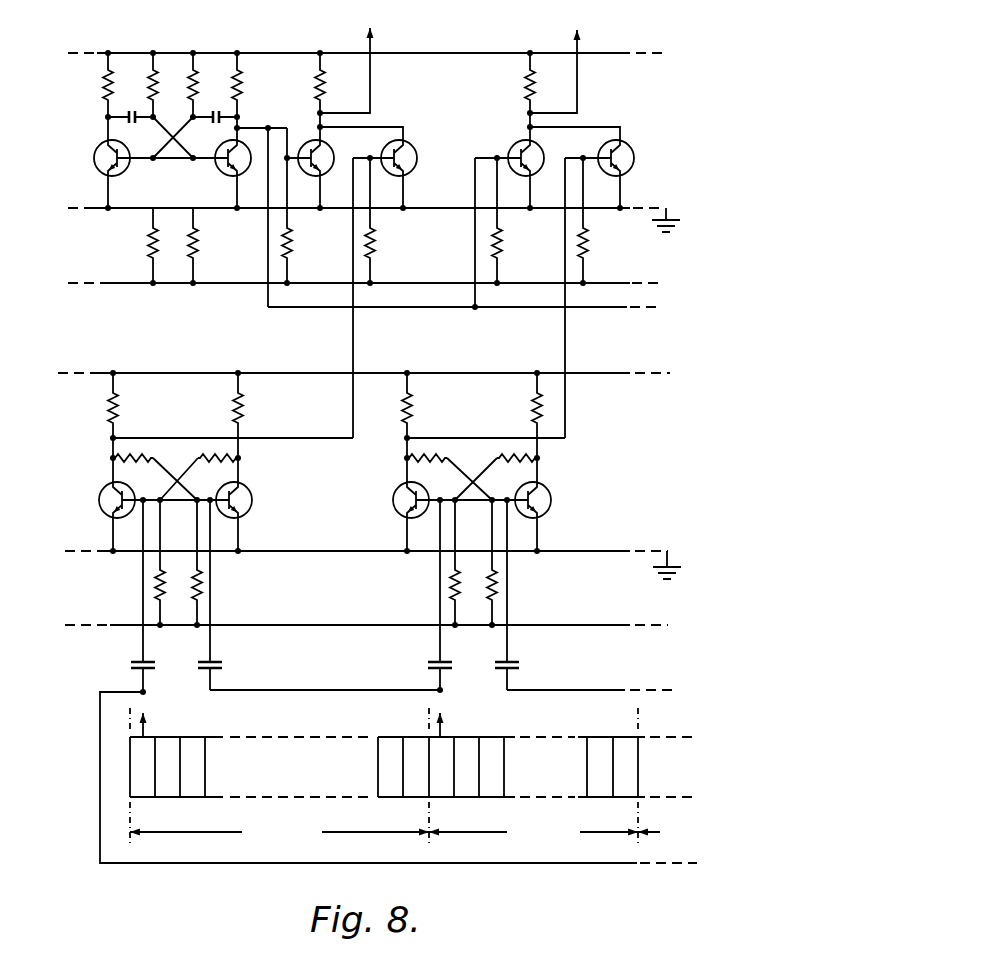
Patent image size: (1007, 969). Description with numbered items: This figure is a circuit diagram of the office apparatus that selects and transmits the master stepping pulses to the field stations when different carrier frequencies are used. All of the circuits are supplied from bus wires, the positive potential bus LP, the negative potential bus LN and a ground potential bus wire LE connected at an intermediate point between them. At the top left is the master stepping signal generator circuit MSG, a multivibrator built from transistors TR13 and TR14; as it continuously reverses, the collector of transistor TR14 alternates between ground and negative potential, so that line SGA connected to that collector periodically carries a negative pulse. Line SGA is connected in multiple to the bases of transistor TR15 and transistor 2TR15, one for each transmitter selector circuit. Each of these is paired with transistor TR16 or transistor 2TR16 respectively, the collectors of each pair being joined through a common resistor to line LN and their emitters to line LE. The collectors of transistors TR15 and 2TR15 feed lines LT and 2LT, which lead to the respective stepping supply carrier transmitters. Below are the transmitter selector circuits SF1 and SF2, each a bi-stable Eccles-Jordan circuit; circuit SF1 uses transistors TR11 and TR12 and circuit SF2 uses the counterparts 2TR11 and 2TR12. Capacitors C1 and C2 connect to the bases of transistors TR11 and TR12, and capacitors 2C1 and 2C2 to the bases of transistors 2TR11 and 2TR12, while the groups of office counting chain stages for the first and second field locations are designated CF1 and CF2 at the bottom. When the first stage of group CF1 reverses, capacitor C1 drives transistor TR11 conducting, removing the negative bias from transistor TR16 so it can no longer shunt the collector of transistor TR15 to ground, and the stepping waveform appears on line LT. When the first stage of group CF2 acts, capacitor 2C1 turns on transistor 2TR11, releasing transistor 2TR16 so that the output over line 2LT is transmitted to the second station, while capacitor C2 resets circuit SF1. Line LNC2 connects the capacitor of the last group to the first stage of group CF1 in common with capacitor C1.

The master stepping signal generator circuit MSG is at (172, 153).
The transistor TR13 is at (94, 158).
The transistor TR14 is at (232, 180).
The transistor TR15 is at (316, 180).
The transistor TR16 is at (407, 172).
The transistor 2TR15 is at (516, 144).
The transistor 2TR16 is at (632, 150).
The line SGA is at (447, 206).
The line LT is at (344, 82).
The line 2LT is at (553, 82).
The negative potential bus LN is at (364, 198).
The ground potential bus wire LE is at (375, 378).
The positive potential bus LP is at (622, 283).
The transmitter selector circuit SF1 is at (230, 499).
The transmitter selector circuit SF2 is at (483, 499).
The transistor TR11 is at (99, 500).
The transistor TR12 is at (252, 500).
The transistor 2TR11 is at (400, 515).
The transistor 2TR12 is at (552, 494).
The capacitor C1 is at (128, 663).
The capacitor C2 is at (223, 663).
The capacitor 2C1 is at (428, 663).
The capacitor 2C2 is at (521, 663).
The group of office counting chain stages CF1 is at (279, 776).
The group of office counting chain stages CF2 is at (537, 776).
The line LNC2 is at (398, 791).